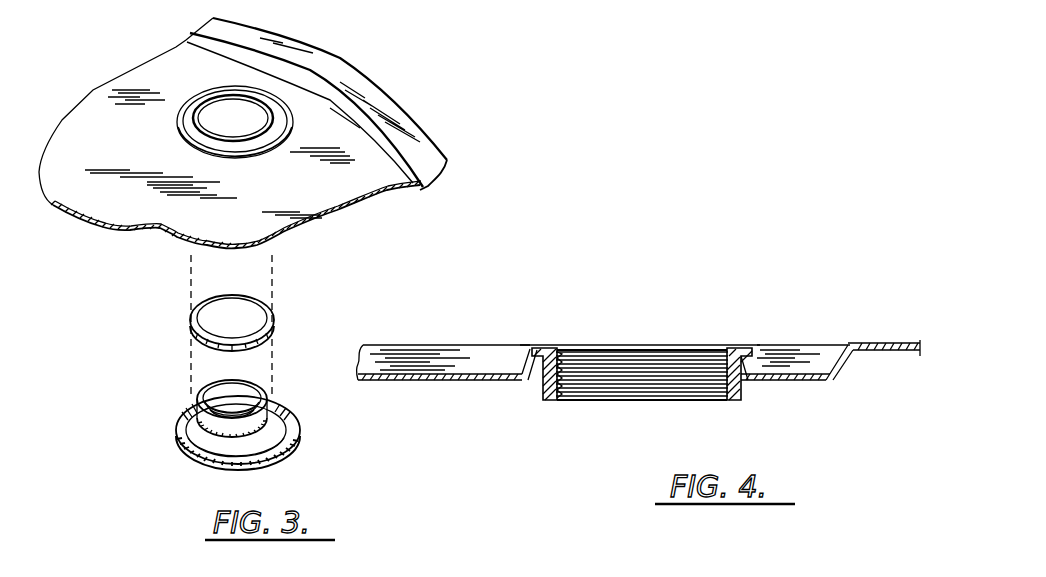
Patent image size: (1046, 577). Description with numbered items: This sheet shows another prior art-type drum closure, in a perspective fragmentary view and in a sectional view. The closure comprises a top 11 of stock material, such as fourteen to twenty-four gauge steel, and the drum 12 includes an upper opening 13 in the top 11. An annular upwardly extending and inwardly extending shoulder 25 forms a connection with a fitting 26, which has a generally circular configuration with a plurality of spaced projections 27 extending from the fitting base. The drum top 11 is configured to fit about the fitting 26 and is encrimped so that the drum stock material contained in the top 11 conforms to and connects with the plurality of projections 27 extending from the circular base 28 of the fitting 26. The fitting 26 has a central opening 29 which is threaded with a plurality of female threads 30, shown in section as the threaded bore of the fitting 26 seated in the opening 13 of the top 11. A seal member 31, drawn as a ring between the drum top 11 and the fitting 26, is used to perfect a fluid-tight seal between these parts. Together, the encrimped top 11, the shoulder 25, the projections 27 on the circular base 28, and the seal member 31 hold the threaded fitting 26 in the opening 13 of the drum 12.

In FIG. 3, the top 11 is at (107, 112).
In FIG. 4, the top 11 is at (488, 374).
In FIG. 3, the drum 12 is at (343, 72).
In FIG. 3, the upper opening 13 is at (232, 120).
In FIG. 3, the shoulder 25 is at (267, 142).
In FIG. 3, the fitting 26 is at (268, 432).
In FIG. 4, the fitting 26 is at (544, 383).
In FIG. 3, the projections 27 is at (180, 441).
In FIG. 3, the circular base 28 is at (240, 472).
In FIG. 3, the central opening 29 is at (232, 407).
In FIG. 3, the female threads 30 is at (240, 383).
In FIG. 4, the female threads 30 is at (642, 383).
In FIG. 3, the seal member 31 is at (187, 322).